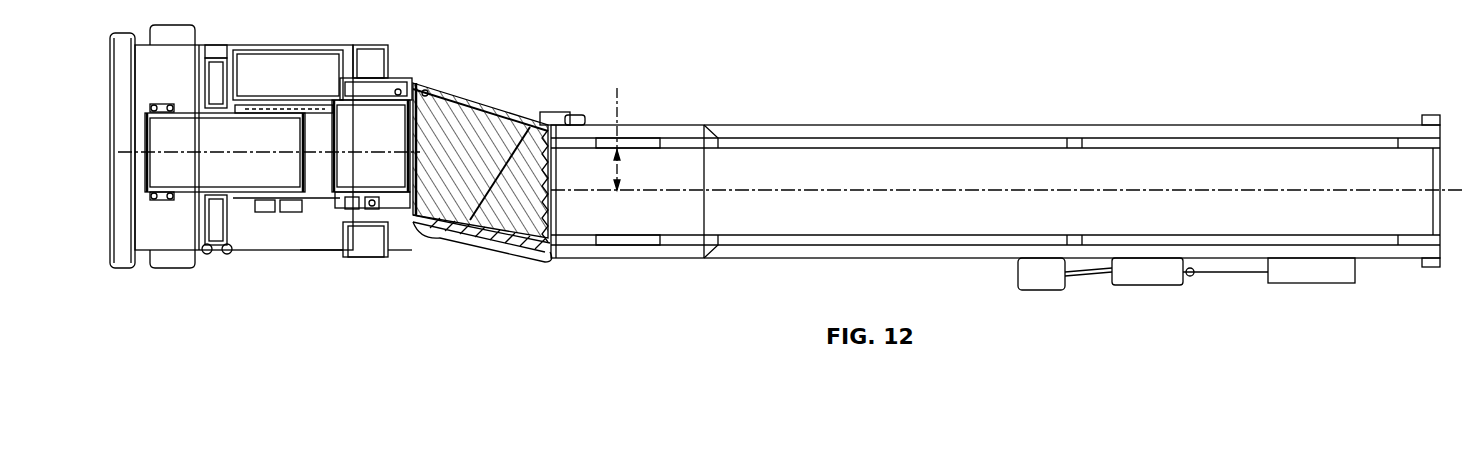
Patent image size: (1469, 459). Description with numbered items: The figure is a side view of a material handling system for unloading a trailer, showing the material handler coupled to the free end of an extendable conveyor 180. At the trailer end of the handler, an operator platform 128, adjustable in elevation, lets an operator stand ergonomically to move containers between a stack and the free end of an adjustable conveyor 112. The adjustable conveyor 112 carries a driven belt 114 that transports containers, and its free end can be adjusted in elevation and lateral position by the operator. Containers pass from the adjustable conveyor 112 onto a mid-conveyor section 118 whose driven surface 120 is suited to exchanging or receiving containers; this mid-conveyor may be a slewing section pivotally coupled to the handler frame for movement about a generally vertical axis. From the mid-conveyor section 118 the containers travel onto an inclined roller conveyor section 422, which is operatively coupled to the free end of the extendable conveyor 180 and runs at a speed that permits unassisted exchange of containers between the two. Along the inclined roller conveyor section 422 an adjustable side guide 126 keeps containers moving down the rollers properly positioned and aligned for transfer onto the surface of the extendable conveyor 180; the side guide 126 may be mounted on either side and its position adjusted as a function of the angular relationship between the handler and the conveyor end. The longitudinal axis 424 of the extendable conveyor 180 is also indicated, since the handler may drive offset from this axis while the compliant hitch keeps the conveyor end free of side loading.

The adjustable conveyor 112 is at (273, 117).
The driven belt 114 is at (225, 152).
The mid-conveyor section 118 is at (393, 100).
The driven surface 120 is at (356, 178).
The adjustable side guide 126 is at (489, 243).
The operator platform 128 is at (152, 146).
The extendable conveyor 180 is at (1001, 201).
The inclined roller conveyor section 422 is at (500, 102).
The longitudinal axis 424 is at (623, 123).